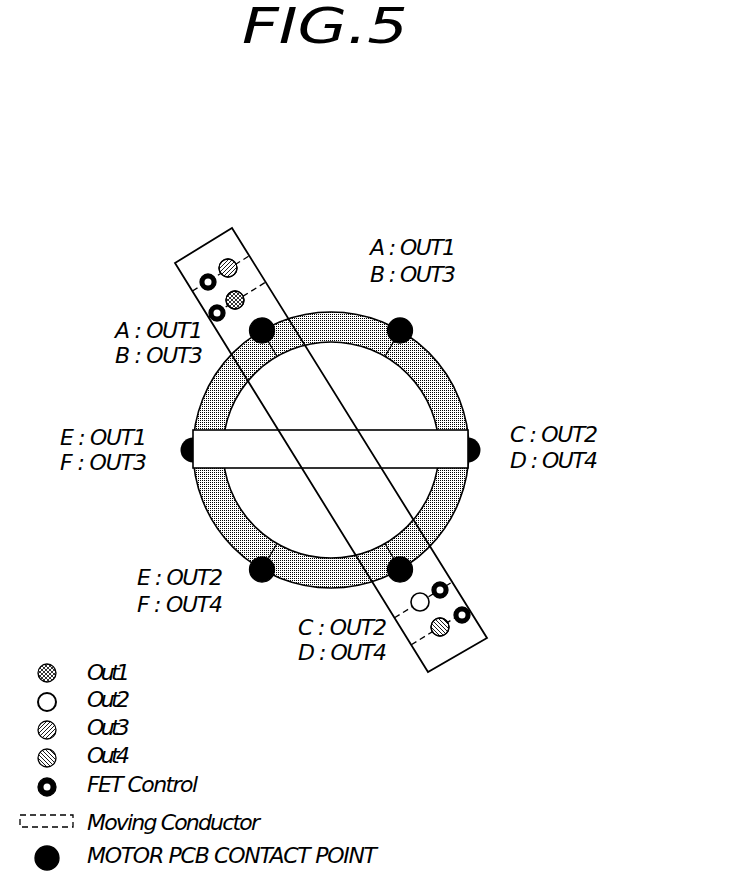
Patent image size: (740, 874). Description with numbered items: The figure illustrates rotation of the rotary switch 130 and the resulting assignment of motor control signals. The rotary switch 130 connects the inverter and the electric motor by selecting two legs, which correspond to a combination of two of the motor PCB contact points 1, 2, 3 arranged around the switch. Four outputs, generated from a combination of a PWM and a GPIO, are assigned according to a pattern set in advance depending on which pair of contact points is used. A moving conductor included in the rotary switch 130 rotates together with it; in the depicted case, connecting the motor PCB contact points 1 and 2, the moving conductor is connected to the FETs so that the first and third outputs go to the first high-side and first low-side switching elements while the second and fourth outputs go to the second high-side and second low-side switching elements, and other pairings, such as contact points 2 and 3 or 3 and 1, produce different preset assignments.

The rotary switch 130 is at (101, 224).
The motor PCB contact point 1 is at (334, 316).
The motor PCB contact point 2 is at (444, 523).
The motor PCB contact point 3 is at (218, 523).